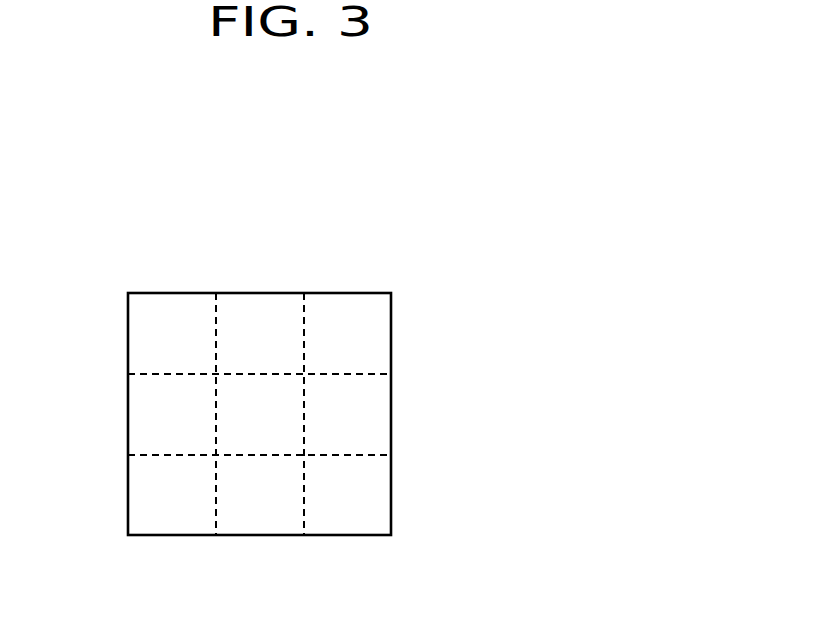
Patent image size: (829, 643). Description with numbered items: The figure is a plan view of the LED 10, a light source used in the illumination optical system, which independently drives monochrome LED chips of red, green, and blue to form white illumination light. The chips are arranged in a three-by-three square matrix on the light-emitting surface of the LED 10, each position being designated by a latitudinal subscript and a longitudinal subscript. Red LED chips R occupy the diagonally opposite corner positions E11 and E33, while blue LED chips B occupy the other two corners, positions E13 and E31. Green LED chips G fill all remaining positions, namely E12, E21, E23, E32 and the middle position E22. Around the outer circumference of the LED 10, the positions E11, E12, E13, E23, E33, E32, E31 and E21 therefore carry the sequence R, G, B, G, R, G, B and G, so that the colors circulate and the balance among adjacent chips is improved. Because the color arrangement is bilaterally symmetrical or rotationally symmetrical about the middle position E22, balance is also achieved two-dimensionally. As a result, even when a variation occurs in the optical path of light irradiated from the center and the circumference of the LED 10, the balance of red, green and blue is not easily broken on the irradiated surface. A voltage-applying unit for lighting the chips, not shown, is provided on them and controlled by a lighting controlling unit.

The LED 10 is at (472, 278).
The arrangement position E11 is at (172, 303).
The arrangement position E12 is at (261, 303).
The arrangement position E13 is at (348, 303).
The arrangement position E21 is at (138, 420).
The middle position E22 is at (285, 394).
The arrangement position E23 is at (383, 440).
The arrangement position E31 is at (173, 523).
The arrangement position E32 is at (261, 523).
The arrangement position E33 is at (383, 498).